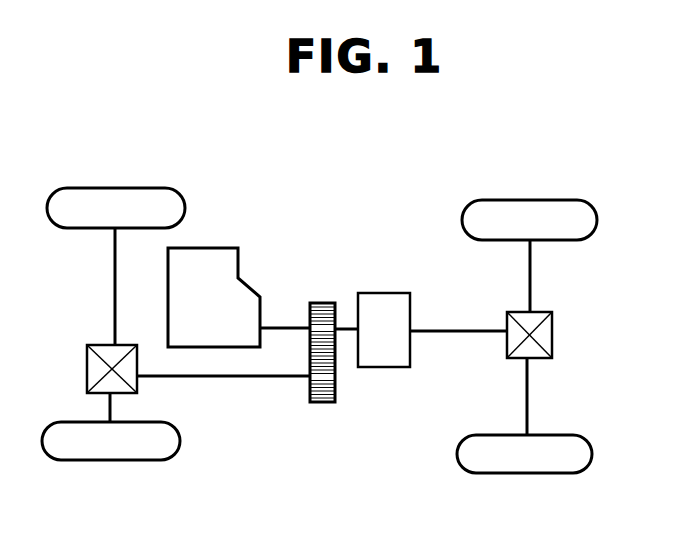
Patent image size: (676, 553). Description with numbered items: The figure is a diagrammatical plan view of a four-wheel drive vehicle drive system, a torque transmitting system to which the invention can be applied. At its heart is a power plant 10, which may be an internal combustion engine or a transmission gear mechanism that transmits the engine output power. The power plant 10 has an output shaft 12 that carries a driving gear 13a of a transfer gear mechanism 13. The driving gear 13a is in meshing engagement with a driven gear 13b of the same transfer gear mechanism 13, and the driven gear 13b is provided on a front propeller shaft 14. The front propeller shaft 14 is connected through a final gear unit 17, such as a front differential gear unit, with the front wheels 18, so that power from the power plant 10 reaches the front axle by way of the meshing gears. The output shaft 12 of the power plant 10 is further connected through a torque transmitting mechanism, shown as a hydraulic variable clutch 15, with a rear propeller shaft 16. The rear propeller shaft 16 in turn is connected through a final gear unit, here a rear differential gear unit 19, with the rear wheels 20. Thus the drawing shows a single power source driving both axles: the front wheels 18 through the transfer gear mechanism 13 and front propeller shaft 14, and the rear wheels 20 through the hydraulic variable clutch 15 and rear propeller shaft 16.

The power plant 10 is at (216, 248).
The output shaft 12 is at (282, 326).
The transfer gear mechanism 13 is at (323, 356).
The driving gear 13a is at (320, 304).
The driven gear 13b is at (318, 404).
The front propeller shaft 14 is at (257, 382).
The hydraulic variable clutch 15 is at (391, 370).
The rear propeller shaft 16 is at (445, 330).
The final gear unit 17 is at (87, 368).
The front wheels 18 is at (113, 188).
The rear differential gear unit 19 is at (555, 332).
The rear wheels 20 is at (527, 200).